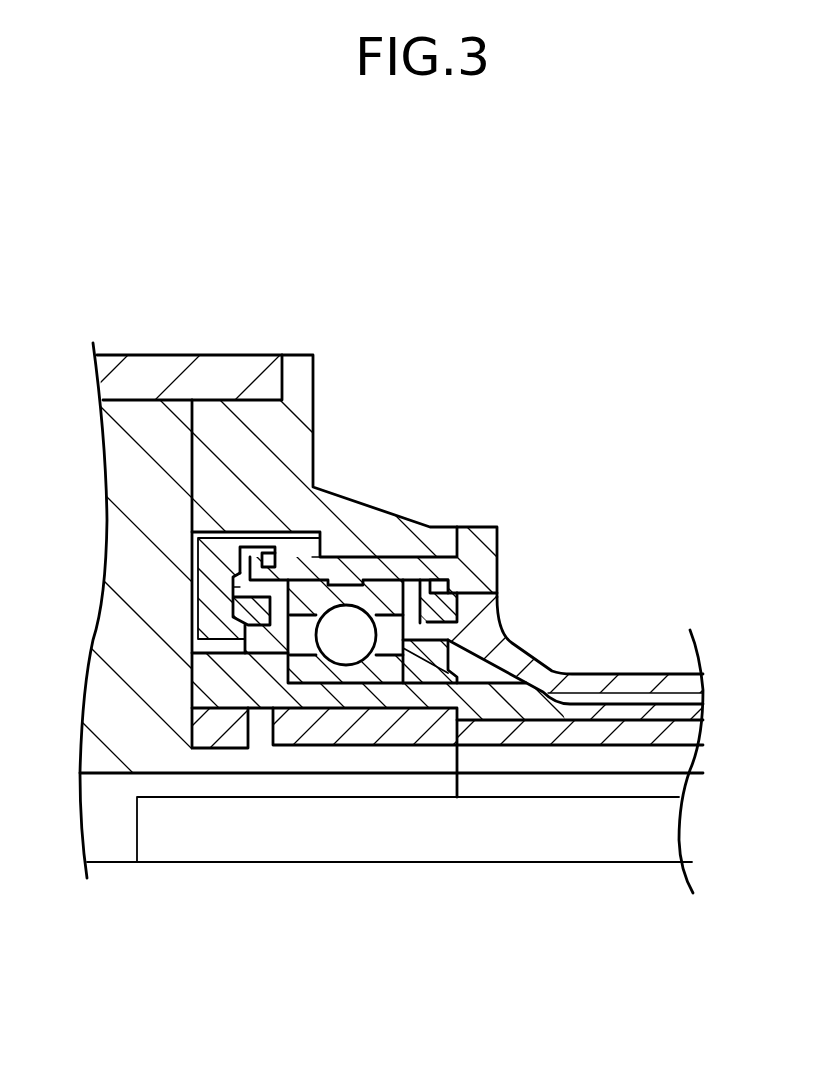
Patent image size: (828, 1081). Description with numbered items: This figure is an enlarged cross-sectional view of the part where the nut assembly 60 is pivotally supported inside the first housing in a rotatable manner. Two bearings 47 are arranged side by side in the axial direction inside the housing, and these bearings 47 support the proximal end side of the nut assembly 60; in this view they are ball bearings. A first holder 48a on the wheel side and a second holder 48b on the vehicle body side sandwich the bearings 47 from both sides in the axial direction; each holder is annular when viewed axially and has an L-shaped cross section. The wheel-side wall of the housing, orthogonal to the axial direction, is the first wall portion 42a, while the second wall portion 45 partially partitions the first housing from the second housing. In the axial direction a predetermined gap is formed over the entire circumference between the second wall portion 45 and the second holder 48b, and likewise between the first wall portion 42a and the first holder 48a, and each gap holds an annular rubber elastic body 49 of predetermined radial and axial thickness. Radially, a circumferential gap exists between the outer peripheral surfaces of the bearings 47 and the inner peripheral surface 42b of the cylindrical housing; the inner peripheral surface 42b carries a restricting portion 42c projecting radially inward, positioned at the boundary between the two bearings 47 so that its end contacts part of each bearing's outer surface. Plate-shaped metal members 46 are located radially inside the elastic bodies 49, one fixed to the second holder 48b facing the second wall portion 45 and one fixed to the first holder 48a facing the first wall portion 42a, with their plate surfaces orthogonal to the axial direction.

The first wall portion 42a is at (503, 623).
The inner peripheral surface 42b is at (301, 590).
The restricting portion 42c is at (357, 588).
The second wall portion 45 is at (220, 567).
The metal member 46 is at (237, 632).
The bearing 47 is at (340, 622).
The first holder 48a is at (413, 607).
The second holder 48b is at (278, 560).
The elastic body 49 is at (260, 612).
The nut assembly 60 is at (657, 710).